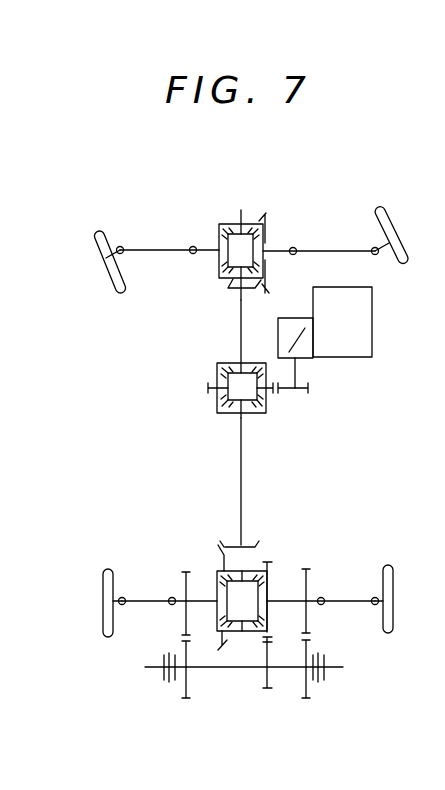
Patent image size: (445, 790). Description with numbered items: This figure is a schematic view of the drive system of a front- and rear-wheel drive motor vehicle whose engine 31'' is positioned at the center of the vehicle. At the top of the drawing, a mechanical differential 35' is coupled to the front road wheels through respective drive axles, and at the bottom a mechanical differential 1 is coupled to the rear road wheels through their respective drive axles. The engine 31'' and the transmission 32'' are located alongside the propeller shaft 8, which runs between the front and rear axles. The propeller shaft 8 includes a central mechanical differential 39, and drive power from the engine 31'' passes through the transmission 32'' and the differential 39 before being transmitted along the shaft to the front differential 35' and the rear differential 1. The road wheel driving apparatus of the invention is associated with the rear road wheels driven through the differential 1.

The mechanical differential 35' is at (244, 227).
The mechanical differential 39 is at (217, 362).
The transmission 32'' is at (295, 336).
The engine 31'' is at (370, 322).
The propeller shaft 8 is at (240, 472).
The mechanical differential 1 is at (213, 559).